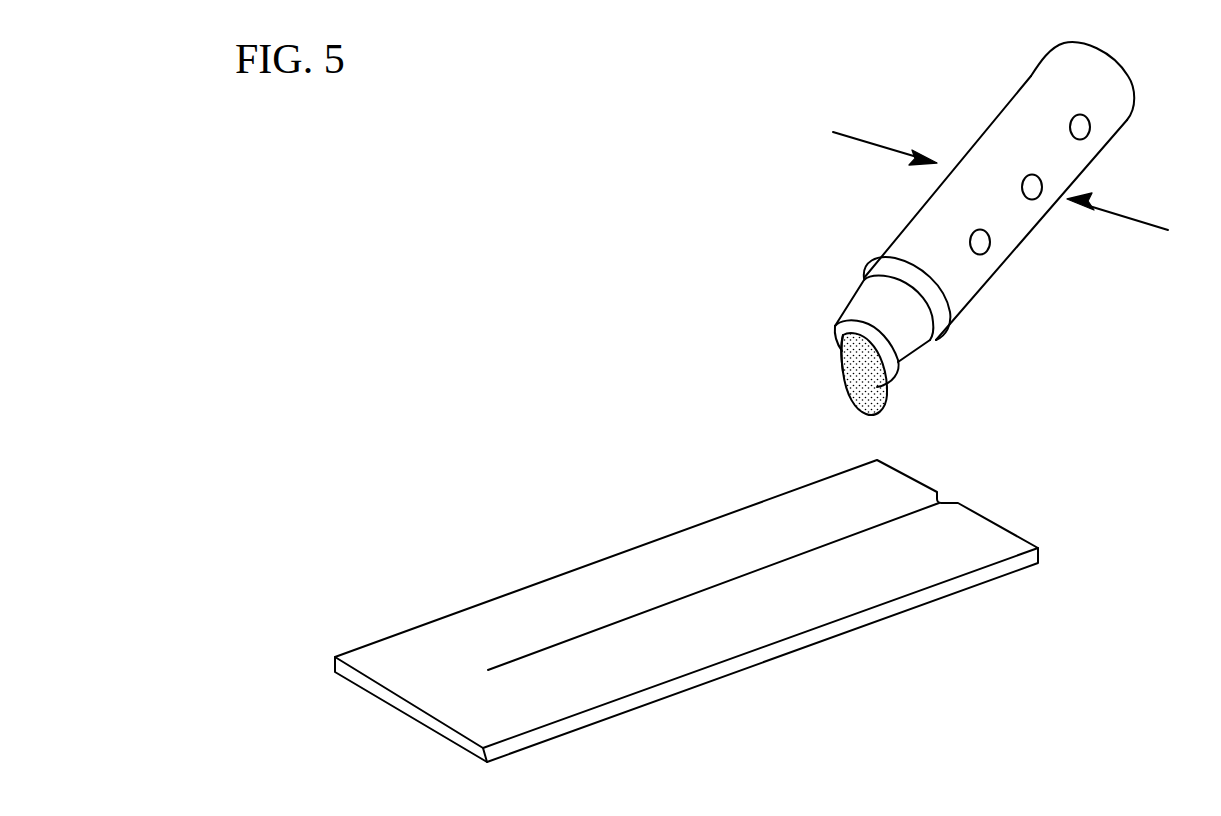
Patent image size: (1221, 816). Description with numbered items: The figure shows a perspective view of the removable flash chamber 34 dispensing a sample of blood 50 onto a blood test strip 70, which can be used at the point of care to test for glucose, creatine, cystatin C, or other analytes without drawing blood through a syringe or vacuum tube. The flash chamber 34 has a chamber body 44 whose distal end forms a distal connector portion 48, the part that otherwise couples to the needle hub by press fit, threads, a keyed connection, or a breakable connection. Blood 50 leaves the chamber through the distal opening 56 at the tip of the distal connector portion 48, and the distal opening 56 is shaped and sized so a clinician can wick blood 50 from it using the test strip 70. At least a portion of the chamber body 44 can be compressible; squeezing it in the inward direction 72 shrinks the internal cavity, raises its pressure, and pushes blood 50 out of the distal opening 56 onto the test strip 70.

The flash chamber 34 is at (1013, 235).
The chamber body 44 is at (1042, 97).
The distal connector portion 48 is at (902, 343).
The blood 50 is at (857, 400).
The distal opening 56 is at (847, 350).
The blood test strip 70 is at (435, 650).
The inward direction 72 is at (862, 138).